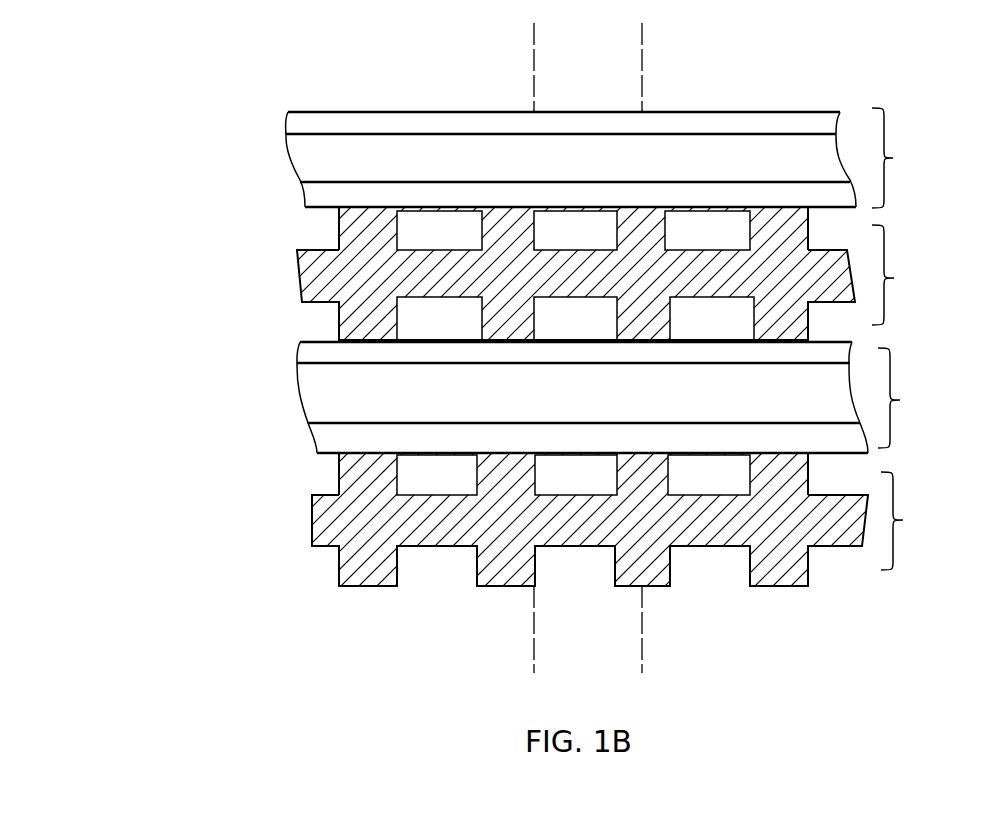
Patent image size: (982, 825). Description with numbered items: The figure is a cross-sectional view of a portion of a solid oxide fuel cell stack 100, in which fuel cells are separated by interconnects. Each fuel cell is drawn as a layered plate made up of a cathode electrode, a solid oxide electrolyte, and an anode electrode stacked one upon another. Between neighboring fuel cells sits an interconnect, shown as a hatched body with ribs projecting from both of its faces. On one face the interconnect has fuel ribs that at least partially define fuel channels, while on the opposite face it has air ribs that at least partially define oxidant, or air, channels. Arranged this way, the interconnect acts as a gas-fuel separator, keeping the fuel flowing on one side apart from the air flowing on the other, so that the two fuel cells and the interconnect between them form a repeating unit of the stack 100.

The solid oxide fuel cell stack 100 is at (163, 222).